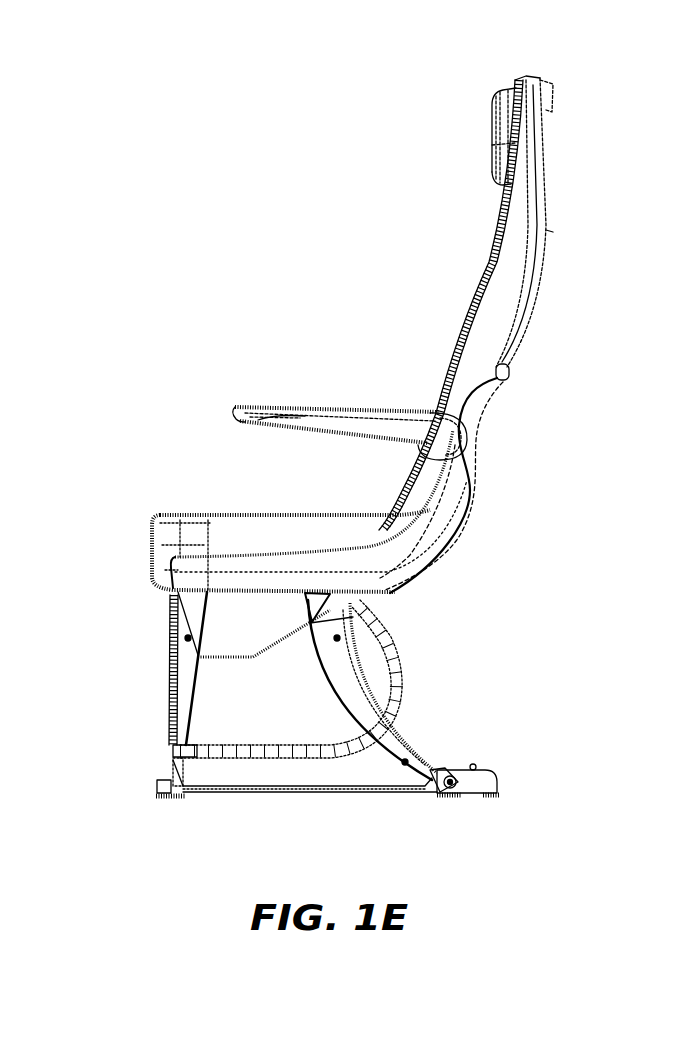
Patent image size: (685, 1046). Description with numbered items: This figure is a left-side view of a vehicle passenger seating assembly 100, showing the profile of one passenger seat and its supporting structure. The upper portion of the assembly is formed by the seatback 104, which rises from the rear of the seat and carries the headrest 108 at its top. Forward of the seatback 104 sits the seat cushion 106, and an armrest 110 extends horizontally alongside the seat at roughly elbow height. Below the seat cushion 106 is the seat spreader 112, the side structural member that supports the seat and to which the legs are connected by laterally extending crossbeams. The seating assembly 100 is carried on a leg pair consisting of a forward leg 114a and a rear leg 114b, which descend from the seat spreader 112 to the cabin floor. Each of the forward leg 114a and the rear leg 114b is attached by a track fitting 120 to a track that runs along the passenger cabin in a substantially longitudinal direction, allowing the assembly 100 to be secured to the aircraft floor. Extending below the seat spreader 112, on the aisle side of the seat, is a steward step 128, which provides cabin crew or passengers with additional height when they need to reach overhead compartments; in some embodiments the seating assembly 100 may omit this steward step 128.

The passenger seating assembly 100 is at (104, 139).
The seatback 104 is at (500, 305).
The seat cushion 106 is at (247, 533).
The headrest 108 is at (492, 138).
The armrest 110 is at (375, 425).
The seat spreader 112 is at (417, 525).
The forward leg 114a is at (188, 682).
The rear leg 114b is at (400, 743).
The track fitting 120 is at (160, 785).
The steward step 128 is at (263, 648).